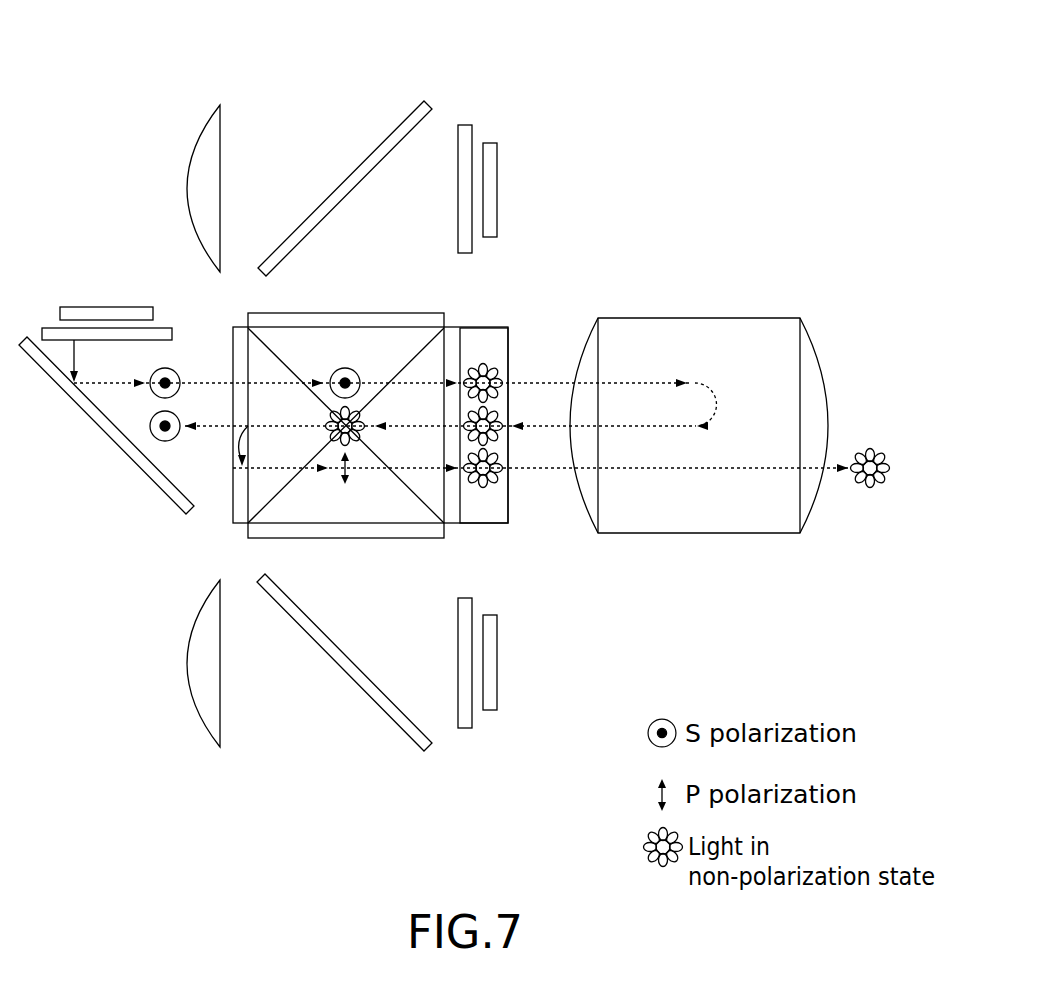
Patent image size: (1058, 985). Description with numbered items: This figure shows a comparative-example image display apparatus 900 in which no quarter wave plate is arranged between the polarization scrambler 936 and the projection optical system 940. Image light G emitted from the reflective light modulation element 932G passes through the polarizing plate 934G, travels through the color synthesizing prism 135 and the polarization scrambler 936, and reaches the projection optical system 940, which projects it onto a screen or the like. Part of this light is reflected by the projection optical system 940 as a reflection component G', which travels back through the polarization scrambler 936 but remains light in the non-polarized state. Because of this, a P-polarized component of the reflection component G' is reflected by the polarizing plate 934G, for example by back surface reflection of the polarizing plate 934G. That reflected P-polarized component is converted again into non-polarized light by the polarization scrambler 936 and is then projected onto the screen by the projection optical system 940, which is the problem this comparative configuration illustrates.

The image display apparatus 900 is at (474, 92).
The reflective light modulation element 932G is at (98, 306).
The polarizing plate 934G is at (238, 328).
The color synthesizing prism 135 is at (447, 331).
The polarization scrambler 936 is at (448, 526).
The projection optical system 940 is at (697, 317).
The image light G is at (182, 365).
The reflection component G' is at (235, 497).